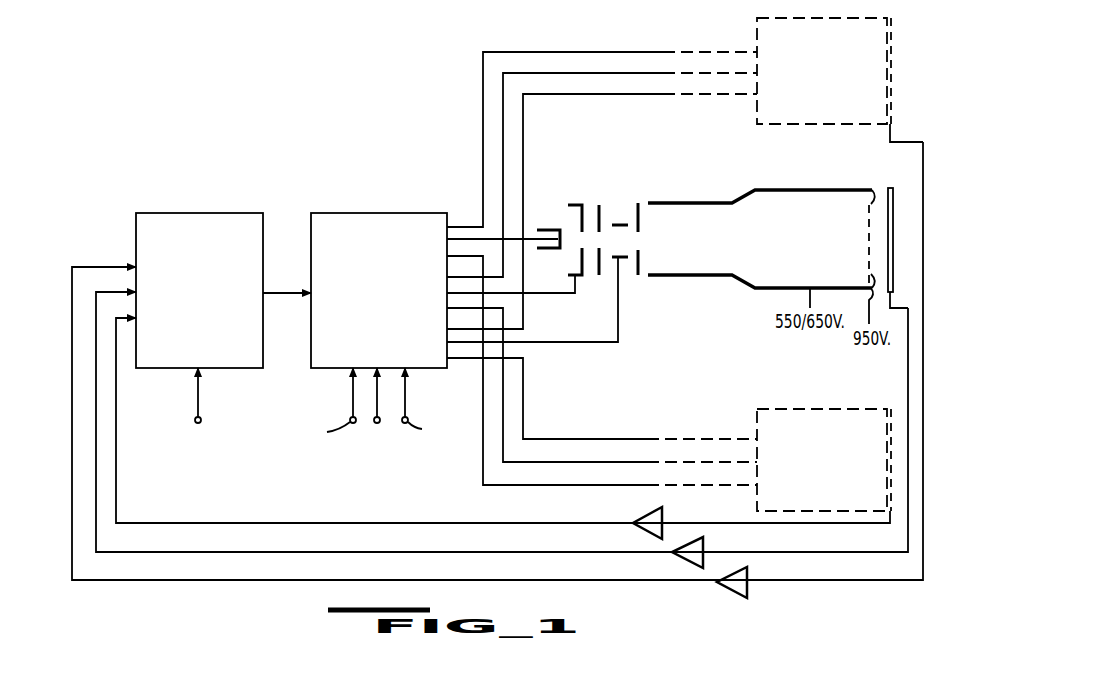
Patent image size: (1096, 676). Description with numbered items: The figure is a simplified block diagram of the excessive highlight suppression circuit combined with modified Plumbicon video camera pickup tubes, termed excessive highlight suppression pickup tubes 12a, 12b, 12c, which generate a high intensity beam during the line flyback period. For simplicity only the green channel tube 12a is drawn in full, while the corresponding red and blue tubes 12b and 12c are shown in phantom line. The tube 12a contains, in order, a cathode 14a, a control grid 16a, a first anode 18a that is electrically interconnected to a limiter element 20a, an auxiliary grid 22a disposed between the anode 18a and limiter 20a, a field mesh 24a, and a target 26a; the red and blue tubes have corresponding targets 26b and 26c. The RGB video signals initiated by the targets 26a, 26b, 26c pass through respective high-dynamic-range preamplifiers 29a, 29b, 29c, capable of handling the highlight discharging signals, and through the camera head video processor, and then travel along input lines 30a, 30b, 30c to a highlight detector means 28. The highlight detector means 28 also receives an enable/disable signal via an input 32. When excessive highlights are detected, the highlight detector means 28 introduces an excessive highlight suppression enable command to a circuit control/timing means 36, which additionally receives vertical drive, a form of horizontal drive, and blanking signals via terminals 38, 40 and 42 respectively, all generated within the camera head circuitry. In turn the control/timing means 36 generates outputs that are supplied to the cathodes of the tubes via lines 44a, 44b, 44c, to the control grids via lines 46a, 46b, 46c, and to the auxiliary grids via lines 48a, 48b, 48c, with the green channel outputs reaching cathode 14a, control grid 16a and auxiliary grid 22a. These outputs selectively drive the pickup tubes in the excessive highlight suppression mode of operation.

The excessive highlight suppression pickup tube 12a is at (724, 198).
The excessive highlight suppression pickup tube 12b is at (755, 27).
The excessive highlight suppression pickup tube 12c is at (808, 405).
The cathode 14a is at (543, 229).
The control grid 16a is at (570, 204).
The first anode 18a is at (597, 204).
The limiter element 20a is at (640, 203).
The auxiliary grid 22a is at (620, 224).
The field mesh 24a is at (871, 190).
The target 26a is at (891, 188).
The target 26b is at (894, 62).
The target 26c is at (893, 425).
The highlight detector means 28 is at (208, 212).
The preamplifier 29a is at (688, 563).
The preamplifier 29b is at (735, 594).
The preamplifier 29c is at (640, 520).
The input line 30a is at (96, 443).
The input line 30b is at (72, 405).
The input line 30c is at (116, 487).
The input 32 is at (201, 420).
The circuit control/timing means 36 is at (368, 212).
The terminal 38 is at (350, 419).
The terminal 40 is at (375, 418).
The terminal 42 is at (407, 418).
The line 44a is at (532, 242).
The line 44b is at (483, 97).
The line 44c is at (568, 439).
The line 46a is at (545, 295).
The line 46b is at (503, 130).
The line 46c is at (606, 462).
The line 48a is at (560, 344).
The line 48b is at (523, 161).
The line 48c is at (643, 485).